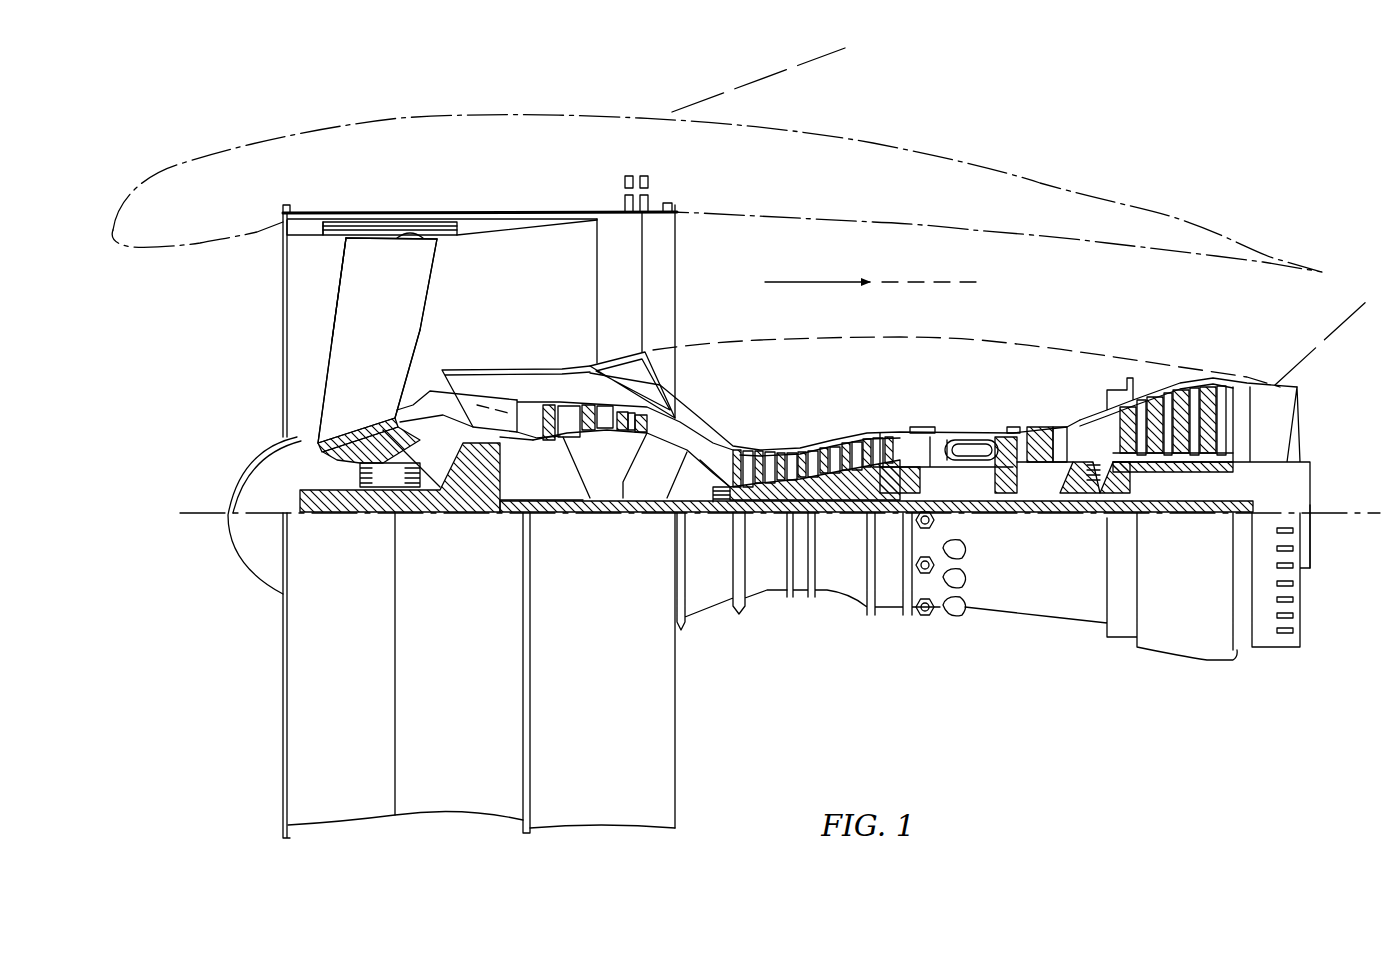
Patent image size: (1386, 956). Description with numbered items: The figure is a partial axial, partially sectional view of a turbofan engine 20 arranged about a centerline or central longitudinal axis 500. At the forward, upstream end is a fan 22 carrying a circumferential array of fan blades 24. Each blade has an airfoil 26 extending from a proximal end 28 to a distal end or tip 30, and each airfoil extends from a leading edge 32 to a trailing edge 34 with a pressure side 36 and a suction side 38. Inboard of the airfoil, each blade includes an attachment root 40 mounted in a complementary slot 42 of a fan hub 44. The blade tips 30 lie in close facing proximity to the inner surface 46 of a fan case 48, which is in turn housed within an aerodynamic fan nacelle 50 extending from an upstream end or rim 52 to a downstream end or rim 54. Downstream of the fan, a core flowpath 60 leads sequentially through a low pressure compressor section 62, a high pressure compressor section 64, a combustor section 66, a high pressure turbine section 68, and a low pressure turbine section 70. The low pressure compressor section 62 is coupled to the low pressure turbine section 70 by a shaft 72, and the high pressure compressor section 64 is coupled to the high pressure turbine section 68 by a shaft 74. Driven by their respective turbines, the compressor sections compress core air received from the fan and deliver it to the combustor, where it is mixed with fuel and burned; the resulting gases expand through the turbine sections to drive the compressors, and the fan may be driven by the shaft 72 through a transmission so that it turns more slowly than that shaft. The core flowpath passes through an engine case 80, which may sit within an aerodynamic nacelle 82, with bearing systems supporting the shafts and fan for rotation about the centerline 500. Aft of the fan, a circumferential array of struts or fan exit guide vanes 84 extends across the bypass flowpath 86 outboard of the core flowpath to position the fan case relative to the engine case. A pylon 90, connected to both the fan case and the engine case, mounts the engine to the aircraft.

The turbofan engine 20 is at (830, 738).
The fan 22 is at (250, 443).
The fan blades 24 is at (353, 370).
The airfoil 26 is at (368, 325).
The proximal end 28 is at (396, 410).
The tip 30 is at (422, 239).
The leading edge 32 is at (345, 298).
The trailing edge 34 is at (433, 277).
The pressure side 36 is at (408, 316).
The suction side 38 is at (405, 263).
The attachment root 40 is at (365, 422).
The slot 42 is at (350, 422).
The fan hub 44 is at (333, 490).
The inner surface of fan case 46 is at (447, 236).
The fan case 48 is at (374, 208).
The fan nacelle 50 is at (410, 112).
The upstream end 52 is at (103, 243).
The downstream end 54 is at (1327, 262).
The core flowpath 60 is at (484, 380).
The low pressure compressor section 62 is at (604, 523).
The high pressure compressor section 64 is at (828, 418).
The combustor section 66 is at (976, 415).
The high pressure turbine section 68 is at (1054, 412).
The low pressure turbine section 70 is at (1221, 372).
The shaft 72 is at (697, 518).
The shaft 74 is at (952, 522).
The engine case 80 is at (871, 627).
The nacelle 82 is at (954, 332).
The struts (fan exit guide vanes) 84 is at (628, 256).
The bypass flowpath 86 is at (913, 278).
The pylon 90 is at (748, 72).
The central longitudinal axis 500 is at (1347, 520).